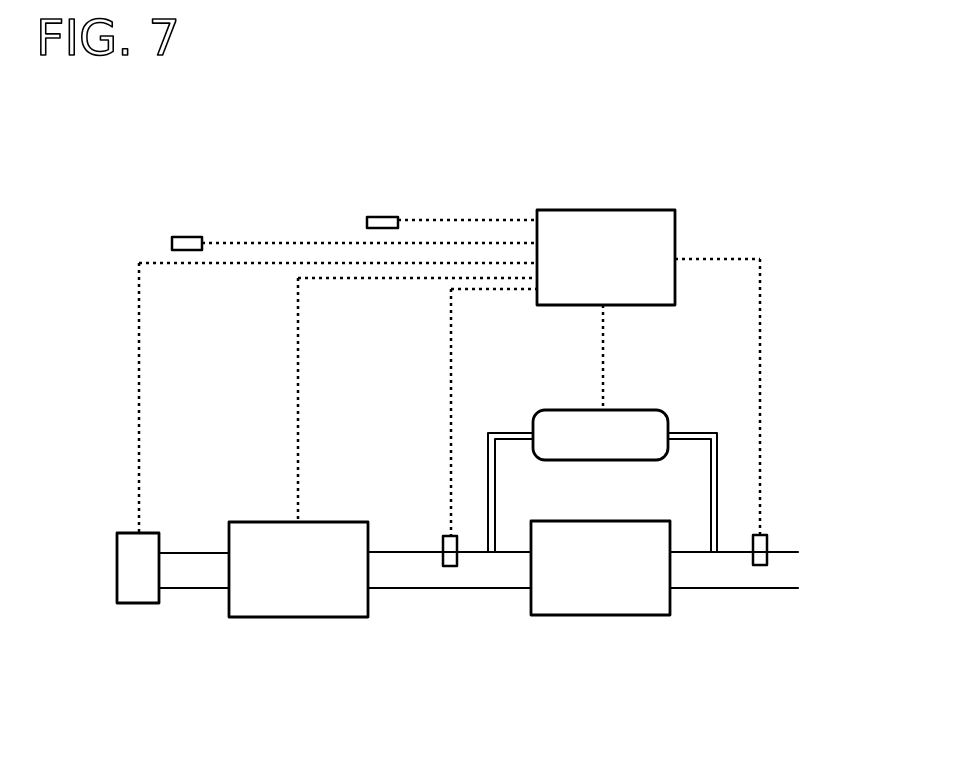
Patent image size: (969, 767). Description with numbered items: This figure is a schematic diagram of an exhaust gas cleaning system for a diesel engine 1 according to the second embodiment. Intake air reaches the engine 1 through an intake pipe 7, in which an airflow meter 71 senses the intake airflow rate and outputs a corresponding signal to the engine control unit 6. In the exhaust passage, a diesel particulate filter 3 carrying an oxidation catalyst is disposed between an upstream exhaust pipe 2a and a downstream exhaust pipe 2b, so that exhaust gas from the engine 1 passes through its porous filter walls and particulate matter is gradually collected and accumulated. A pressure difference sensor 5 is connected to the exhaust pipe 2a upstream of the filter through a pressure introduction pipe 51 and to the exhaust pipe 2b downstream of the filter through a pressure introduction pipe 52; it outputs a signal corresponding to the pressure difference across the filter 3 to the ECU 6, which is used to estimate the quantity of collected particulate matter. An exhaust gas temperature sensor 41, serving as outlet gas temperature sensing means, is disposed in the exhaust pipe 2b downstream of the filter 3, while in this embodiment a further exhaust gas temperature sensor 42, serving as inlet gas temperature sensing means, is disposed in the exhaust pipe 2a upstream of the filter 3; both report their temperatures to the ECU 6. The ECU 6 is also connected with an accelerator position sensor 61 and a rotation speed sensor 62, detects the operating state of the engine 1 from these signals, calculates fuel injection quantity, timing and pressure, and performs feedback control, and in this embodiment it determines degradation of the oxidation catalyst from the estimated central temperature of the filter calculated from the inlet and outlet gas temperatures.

The diesel engine 1 is at (295, 617).
The upstream exhaust pipe 2a is at (475, 573).
The downstream exhaust pipe 2b is at (728, 573).
The diesel particulate filter 3 is at (603, 617).
The pressure difference sensor 5 is at (572, 410).
The pressure introduction pipe 51 is at (510, 433).
The pressure introduction pipe 52 is at (692, 433).
The engine control unit 6 is at (677, 213).
The accelerator position sensor 61 is at (380, 217).
The rotation speed sensor 62 is at (186, 237).
The intake pipe 7 is at (197, 573).
The airflow meter 71 is at (137, 598).
The exhaust gas temperature sensor 41 is at (767, 538).
The exhaust gas temperature sensor 42 is at (443, 537).